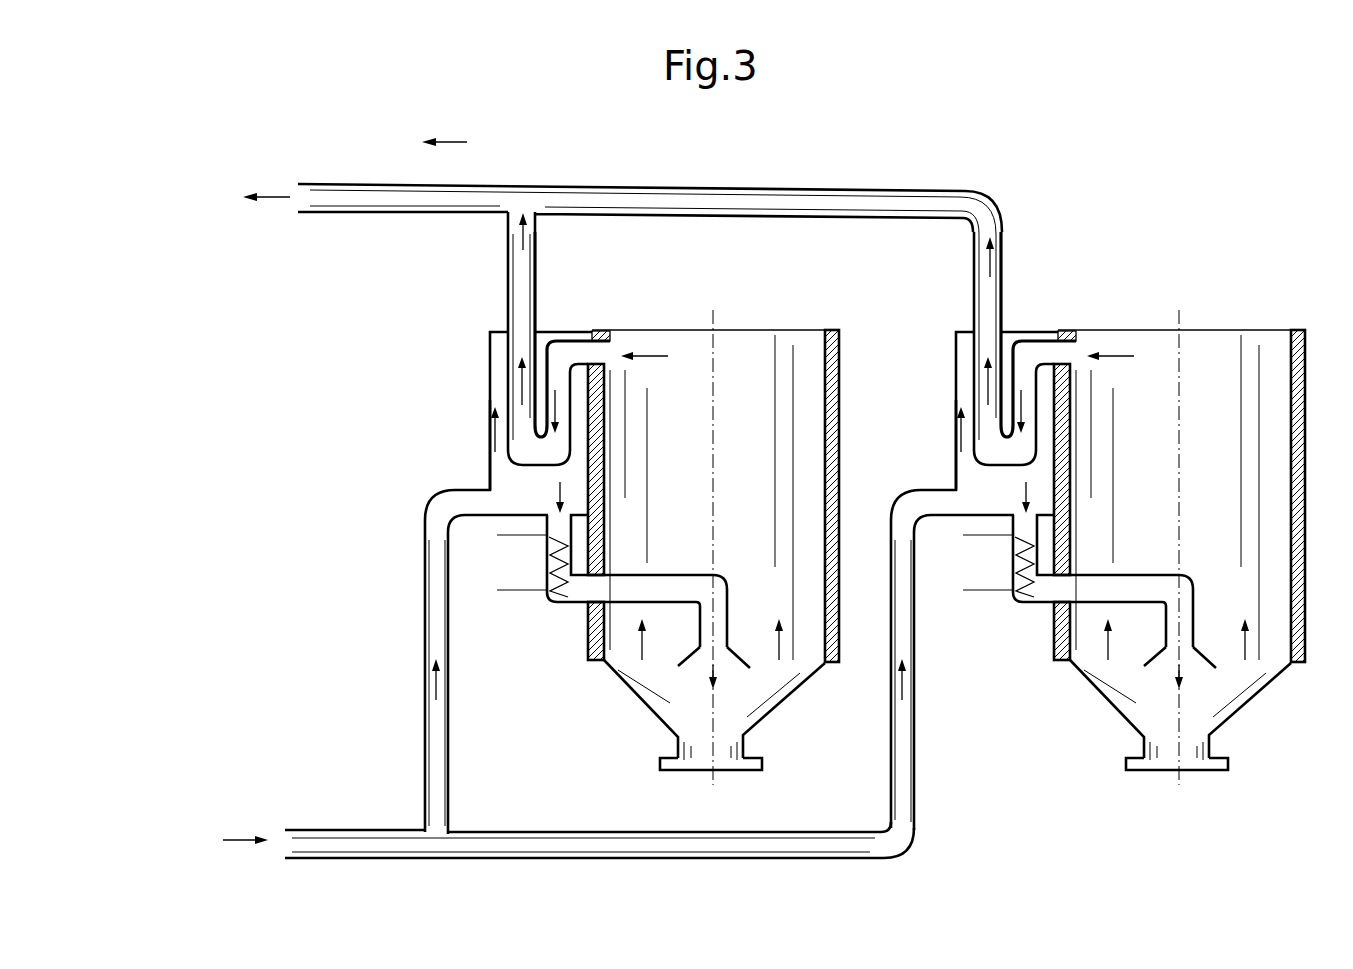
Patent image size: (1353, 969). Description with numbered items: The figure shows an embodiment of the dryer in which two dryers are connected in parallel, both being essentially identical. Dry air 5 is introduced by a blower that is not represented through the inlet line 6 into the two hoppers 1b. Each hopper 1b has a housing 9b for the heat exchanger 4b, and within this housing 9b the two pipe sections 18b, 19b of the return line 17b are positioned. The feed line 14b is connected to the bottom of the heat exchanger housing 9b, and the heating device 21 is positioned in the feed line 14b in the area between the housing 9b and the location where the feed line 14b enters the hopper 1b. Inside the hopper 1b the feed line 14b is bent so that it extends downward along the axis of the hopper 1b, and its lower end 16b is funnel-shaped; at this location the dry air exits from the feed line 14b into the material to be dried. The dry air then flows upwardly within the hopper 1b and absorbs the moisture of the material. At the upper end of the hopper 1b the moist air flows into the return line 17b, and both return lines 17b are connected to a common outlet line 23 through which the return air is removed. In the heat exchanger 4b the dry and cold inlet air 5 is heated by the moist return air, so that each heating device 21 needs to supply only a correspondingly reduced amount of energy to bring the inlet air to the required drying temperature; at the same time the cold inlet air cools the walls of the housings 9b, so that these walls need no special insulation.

The hopper 1b is at (745, 373).
The heat exchanger 4b is at (490, 350).
The dry air 5 is at (240, 838).
The inlet line 6 is at (432, 732).
The housing 9b is at (487, 445).
The feed line 14b is at (557, 603).
The lower end 16b is at (698, 648).
The return line 17b is at (568, 358).
The pipe section 18b is at (560, 412).
The pipe section 19b is at (523, 432).
The heating device 21 is at (548, 557).
The outlet line 23 is at (342, 200).